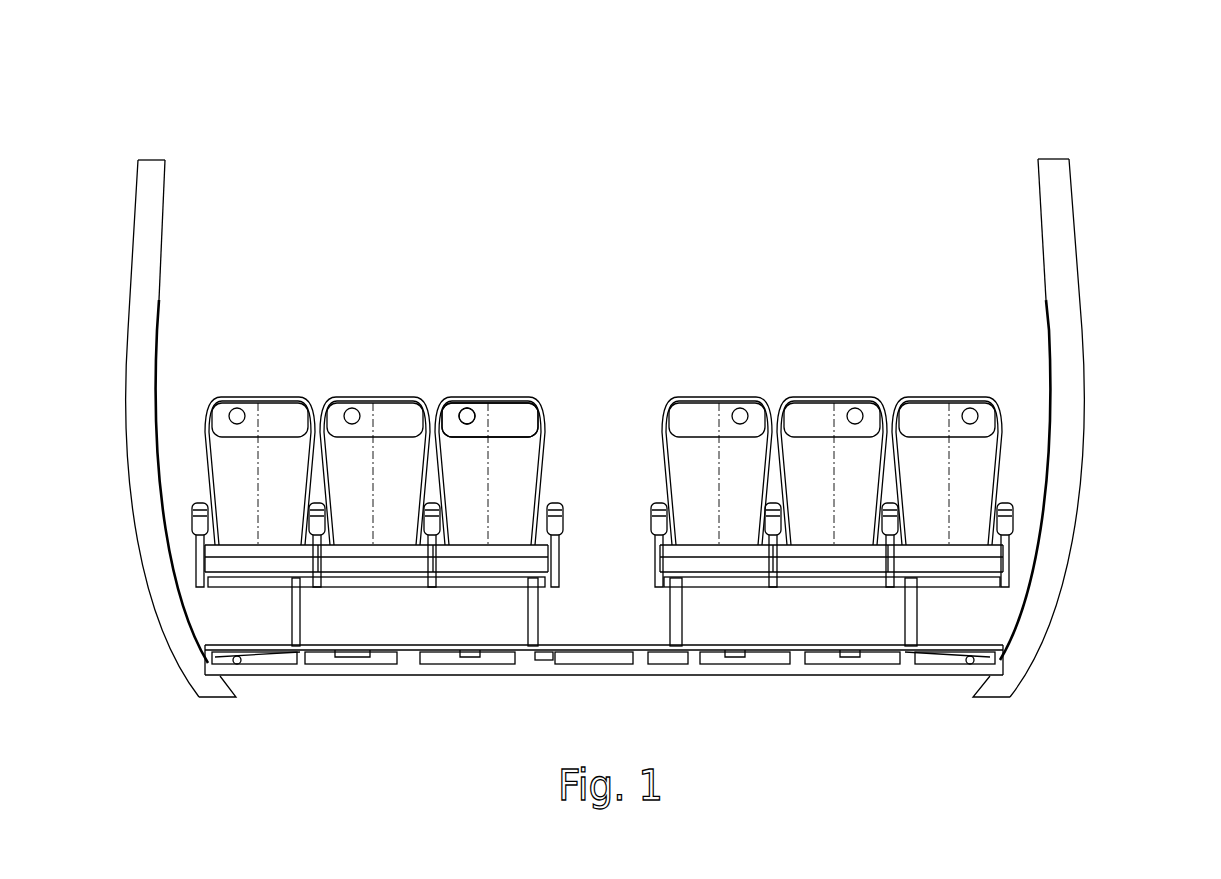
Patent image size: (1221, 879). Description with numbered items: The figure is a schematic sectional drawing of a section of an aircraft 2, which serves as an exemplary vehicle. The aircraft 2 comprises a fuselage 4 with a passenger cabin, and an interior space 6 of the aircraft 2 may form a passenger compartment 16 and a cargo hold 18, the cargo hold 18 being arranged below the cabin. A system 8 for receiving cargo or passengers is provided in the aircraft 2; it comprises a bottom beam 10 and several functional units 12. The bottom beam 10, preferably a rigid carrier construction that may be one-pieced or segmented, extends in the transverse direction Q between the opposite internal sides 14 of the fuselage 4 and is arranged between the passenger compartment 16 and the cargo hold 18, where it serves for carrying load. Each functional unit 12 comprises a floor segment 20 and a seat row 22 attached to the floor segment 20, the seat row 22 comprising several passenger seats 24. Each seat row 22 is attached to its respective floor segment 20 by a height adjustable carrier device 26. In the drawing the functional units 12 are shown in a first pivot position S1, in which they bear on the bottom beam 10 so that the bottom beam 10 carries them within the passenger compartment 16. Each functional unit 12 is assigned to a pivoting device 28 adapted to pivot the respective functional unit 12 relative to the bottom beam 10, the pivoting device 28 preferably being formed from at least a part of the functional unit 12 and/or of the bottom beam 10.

The aircraft 2 is at (654, 451).
The fuselage 4 is at (1083, 322).
The interior space 6 is at (903, 294).
The system 8 is at (826, 706).
The bottom beam 10 is at (604, 687).
The functional unit 12 is at (602, 461).
The internal side 14 is at (172, 290).
The passenger compartment 16 is at (750, 234).
The cargo hold 18 is at (651, 716).
The floor segment 20 is at (417, 643).
The seat row 22 is at (403, 392).
The passenger seat 24 is at (470, 398).
The height adjustable carrier device 26 is at (549, 607).
The pivoting device 28 is at (238, 670).
The first pivot position S1 is at (581, 394).
The transverse direction Q is at (556, 67).